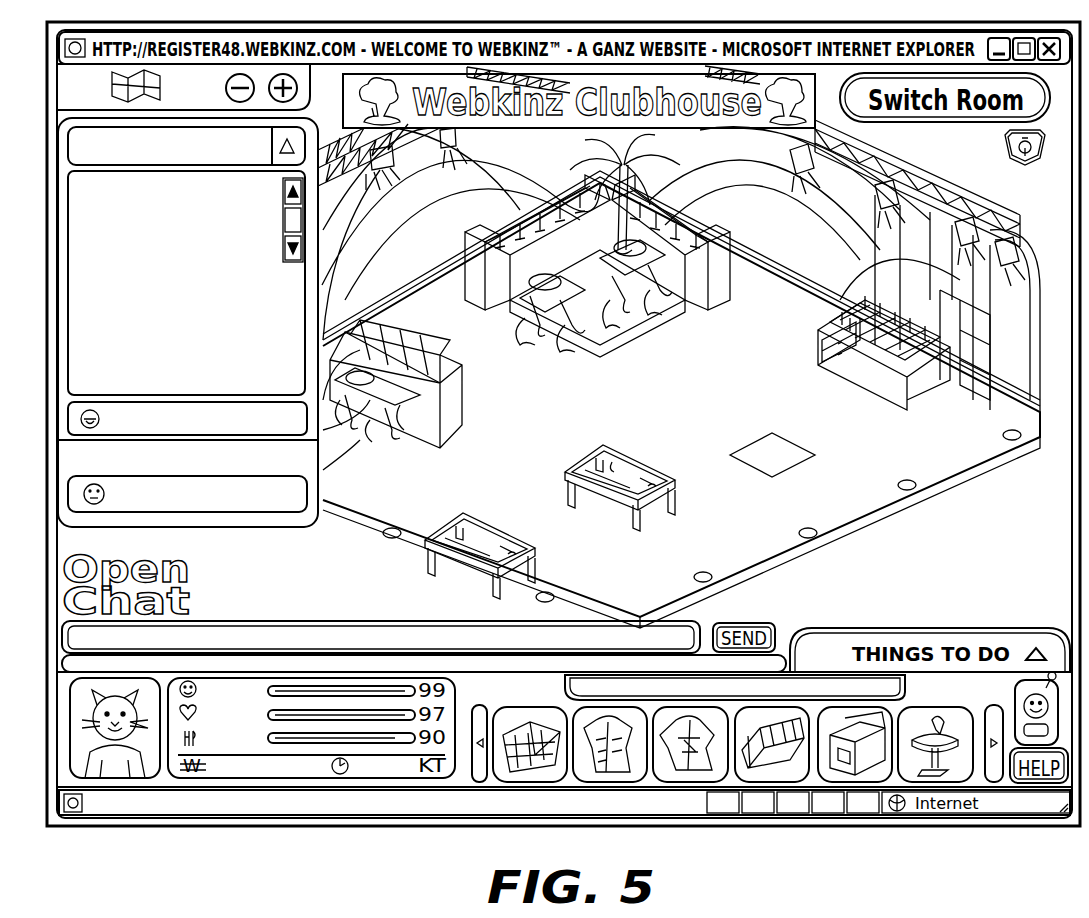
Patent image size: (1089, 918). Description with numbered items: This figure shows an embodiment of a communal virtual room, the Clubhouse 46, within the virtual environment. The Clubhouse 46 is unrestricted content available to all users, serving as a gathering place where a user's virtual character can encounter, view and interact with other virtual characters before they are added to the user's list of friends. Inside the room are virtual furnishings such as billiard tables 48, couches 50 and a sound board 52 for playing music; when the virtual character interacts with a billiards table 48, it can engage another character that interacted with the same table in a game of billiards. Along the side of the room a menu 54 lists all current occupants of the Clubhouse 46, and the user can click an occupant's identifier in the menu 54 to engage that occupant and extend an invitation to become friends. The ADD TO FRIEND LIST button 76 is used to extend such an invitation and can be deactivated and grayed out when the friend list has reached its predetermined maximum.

The Clubhouse 46 is at (697, 375).
The billiard tables 48 is at (567, 458).
The couches 50 is at (455, 388).
The sound board 52 is at (832, 372).
The menu 54 is at (240, 322).
The ADD TO FRIEND LIST button 76 is at (277, 402).